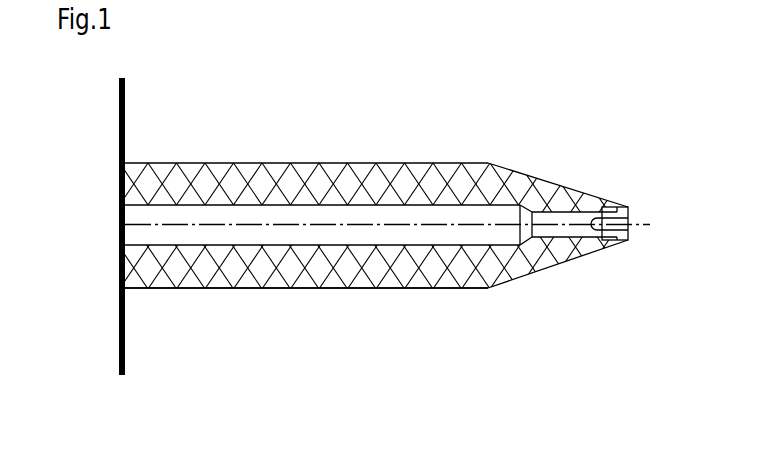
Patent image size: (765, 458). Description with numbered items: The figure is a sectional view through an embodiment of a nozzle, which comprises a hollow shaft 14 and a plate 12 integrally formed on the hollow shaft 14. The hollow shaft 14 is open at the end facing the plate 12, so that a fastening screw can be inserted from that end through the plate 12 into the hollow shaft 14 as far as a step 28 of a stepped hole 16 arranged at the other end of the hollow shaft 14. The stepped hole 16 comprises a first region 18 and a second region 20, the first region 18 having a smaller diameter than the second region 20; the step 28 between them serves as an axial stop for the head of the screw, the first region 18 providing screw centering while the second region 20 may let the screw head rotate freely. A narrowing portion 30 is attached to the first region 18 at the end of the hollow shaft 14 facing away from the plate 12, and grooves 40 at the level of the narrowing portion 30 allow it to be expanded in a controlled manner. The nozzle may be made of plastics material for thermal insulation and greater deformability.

The plate 12 is at (124, 140).
The hollow shaft 14 is at (308, 163).
The stepped hole 16 is at (537, 195).
The first region 18 is at (575, 255).
The second region 20 is at (460, 262).
The step 28 is at (531, 243).
The narrowing portion 30 is at (619, 204).
The grooves 40 is at (628, 228).